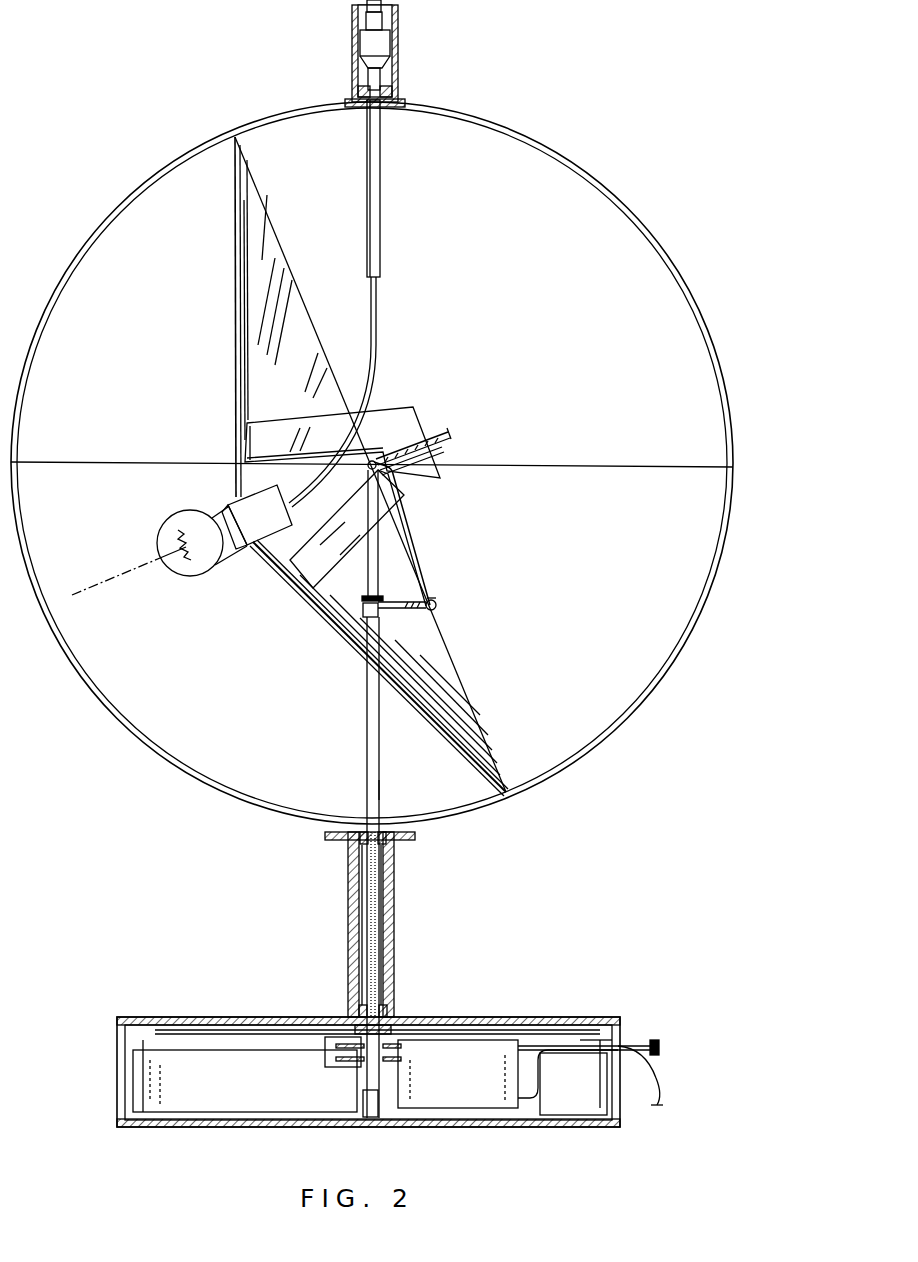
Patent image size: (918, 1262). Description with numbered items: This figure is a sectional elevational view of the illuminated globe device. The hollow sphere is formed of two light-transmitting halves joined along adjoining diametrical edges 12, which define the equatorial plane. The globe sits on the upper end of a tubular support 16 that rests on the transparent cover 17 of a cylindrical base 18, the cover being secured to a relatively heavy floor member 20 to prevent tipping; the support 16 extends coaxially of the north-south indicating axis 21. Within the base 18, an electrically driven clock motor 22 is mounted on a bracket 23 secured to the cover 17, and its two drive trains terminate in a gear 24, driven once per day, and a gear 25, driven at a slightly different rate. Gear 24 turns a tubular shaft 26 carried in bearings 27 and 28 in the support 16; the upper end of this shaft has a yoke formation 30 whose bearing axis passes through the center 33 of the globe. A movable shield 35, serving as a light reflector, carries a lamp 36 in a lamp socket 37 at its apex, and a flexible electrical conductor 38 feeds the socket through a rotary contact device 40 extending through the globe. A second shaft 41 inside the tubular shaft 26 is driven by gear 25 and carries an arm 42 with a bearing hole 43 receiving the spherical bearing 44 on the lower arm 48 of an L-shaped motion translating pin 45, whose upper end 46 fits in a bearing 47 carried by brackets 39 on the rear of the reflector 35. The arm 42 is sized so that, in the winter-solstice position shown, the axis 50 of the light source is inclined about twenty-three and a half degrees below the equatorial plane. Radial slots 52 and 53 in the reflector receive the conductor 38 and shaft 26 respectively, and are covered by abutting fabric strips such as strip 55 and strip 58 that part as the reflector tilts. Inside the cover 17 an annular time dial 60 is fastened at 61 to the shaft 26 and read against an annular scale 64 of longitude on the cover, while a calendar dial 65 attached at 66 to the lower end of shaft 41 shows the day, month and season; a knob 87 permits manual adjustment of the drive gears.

The adjoining diametrical edges 12 is at (692, 467).
The tubular support 16 is at (395, 922).
The transparent cover 17 is at (590, 1020).
The cylindrical base 18 is at (118, 1057).
The floor member 20 is at (212, 1124).
The north-south indicating axis 21 is at (380, 402).
The clock motor 22 is at (495, 1110).
The bracket 23 is at (612, 1034).
The gear 24 is at (336, 1050).
The gear 25 is at (346, 1062).
The tubular shaft 26 is at (380, 790).
The bearing 27 is at (348, 1018).
The bearing 28 is at (350, 838).
The yoke formation 30 is at (380, 562).
The center of the globe 33 is at (369, 468).
The shield 35 is at (234, 393).
The lamp 36 is at (200, 577).
The lamp socket 37 is at (232, 504).
The flexible electrical conductor 38 is at (376, 312).
The brackets 39 is at (403, 408).
The rotary contact device 40 is at (352, 40).
The second shaft 41 is at (370, 740).
The arm 42 is at (435, 600).
The bearing hole 43 is at (437, 610).
The spherical bearing 44 is at (440, 603).
The motion translating pin 45 is at (400, 522).
The upper end 46 is at (448, 432).
The bearing 47 is at (437, 448).
The lower arm 48 is at (407, 538).
The axis of the light source 50 is at (150, 563).
The slot 52 is at (235, 275).
The slot 53 is at (466, 745).
The fabric strip 55 is at (242, 198).
The fabric strip 58 is at (450, 727).
The time dial 60 is at (175, 1030).
The fastening 61 is at (392, 1033).
The annular scale 64 is at (208, 1018).
The calendar dial 65 is at (143, 1040).
The attachment 66 is at (380, 1118).
The knob 87 is at (660, 1047).